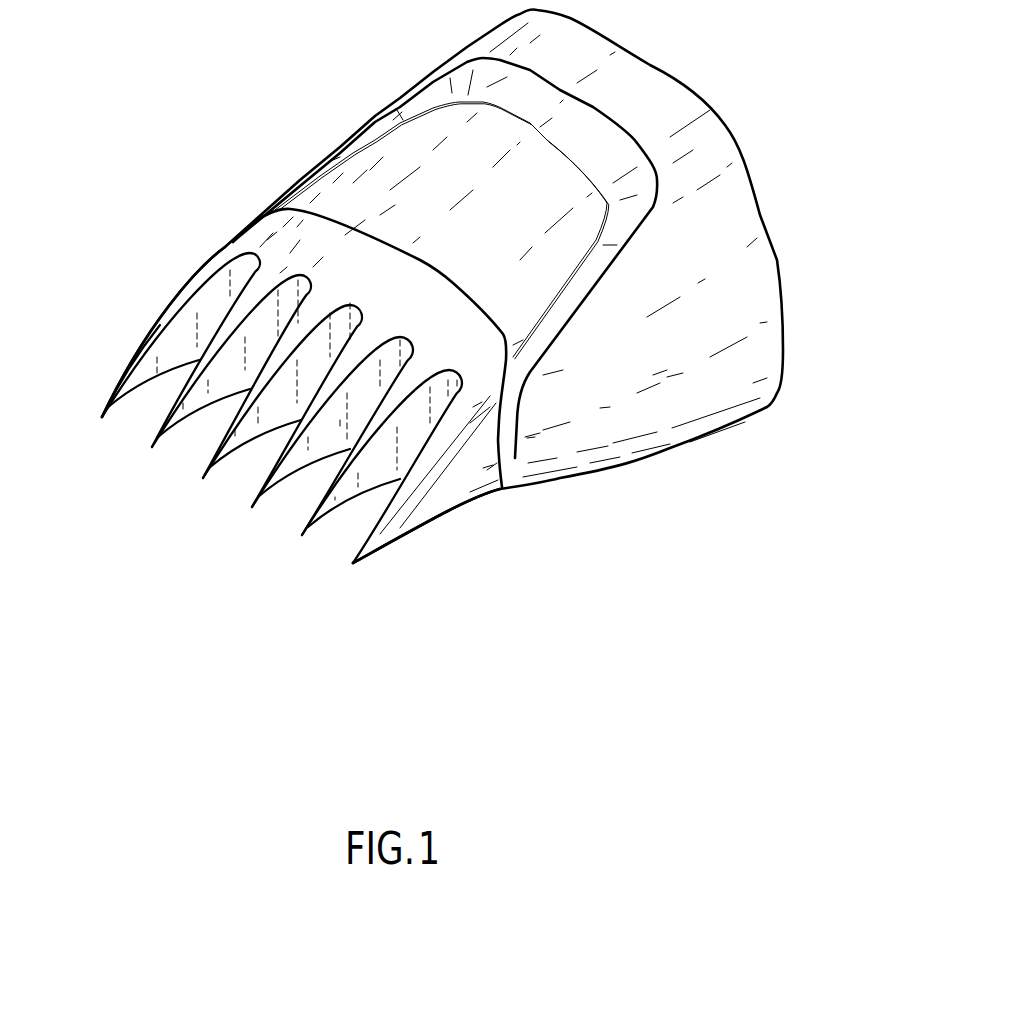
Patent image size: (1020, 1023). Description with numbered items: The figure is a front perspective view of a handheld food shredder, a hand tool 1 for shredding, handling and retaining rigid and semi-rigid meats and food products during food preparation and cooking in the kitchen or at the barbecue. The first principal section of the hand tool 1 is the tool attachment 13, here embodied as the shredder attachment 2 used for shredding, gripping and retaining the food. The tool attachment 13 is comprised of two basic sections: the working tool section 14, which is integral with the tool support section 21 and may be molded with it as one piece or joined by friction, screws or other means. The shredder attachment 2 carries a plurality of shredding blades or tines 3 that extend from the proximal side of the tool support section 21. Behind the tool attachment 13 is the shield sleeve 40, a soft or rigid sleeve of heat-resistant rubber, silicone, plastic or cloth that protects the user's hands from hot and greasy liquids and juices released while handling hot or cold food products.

The hand tool 1 is at (197, 255).
The shredder attachment 2 is at (118, 371).
The tines 3 is at (96, 425).
The tool attachment 13 is at (445, 527).
The working tool section 14 is at (152, 322).
The tool support section 21 is at (298, 232).
The shield sleeve 40 is at (618, 445).